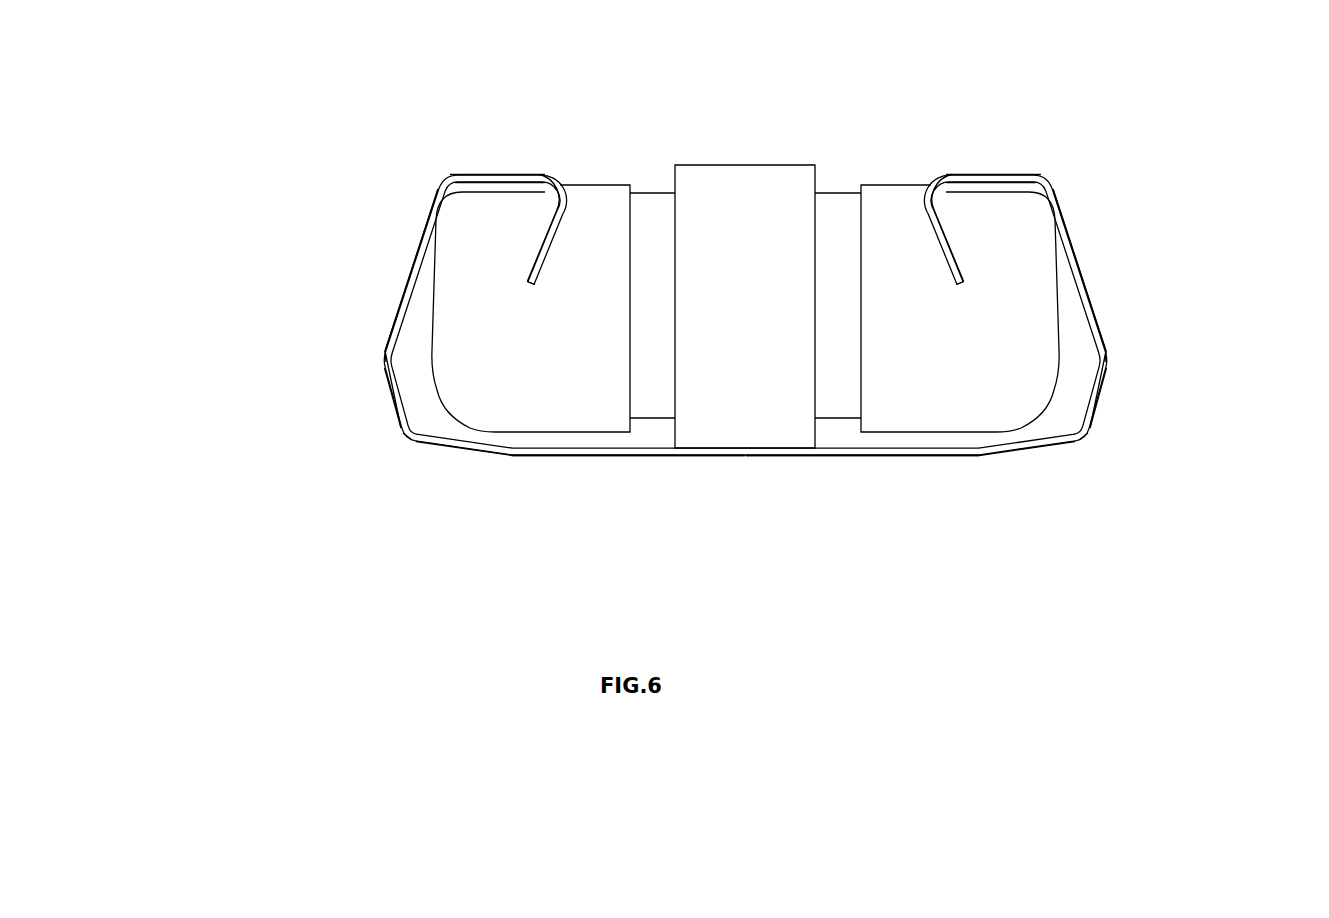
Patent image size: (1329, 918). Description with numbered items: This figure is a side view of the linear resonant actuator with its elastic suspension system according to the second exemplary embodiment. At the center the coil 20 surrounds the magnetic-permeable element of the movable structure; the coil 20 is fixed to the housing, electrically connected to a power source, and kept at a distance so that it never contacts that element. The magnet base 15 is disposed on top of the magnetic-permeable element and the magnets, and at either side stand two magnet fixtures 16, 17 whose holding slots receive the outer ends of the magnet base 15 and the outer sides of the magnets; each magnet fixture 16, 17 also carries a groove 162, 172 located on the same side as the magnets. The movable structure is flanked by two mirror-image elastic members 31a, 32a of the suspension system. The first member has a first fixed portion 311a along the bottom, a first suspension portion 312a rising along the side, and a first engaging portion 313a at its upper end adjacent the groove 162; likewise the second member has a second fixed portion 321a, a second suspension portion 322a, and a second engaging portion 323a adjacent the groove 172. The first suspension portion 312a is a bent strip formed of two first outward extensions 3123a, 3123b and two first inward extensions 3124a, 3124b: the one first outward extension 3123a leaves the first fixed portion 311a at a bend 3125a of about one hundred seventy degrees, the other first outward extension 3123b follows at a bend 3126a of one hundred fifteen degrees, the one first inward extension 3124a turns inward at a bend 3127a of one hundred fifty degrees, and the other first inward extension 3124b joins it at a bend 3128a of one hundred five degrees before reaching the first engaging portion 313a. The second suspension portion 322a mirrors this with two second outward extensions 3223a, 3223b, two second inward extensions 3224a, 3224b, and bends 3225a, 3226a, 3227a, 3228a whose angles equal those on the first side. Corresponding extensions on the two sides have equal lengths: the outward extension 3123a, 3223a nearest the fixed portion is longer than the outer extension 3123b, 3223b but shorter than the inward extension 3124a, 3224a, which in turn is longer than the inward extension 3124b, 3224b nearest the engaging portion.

The magnet base 15 is at (650, 207).
The magnet fixture 16 is at (613, 205).
The magnet fixture 17 is at (877, 195).
The coil 20 is at (743, 178).
The groove 162 is at (548, 258).
The groove 172 is at (941, 248).
The first supporting frame 31a is at (149, 543).
The second supporting frame 32a is at (1214, 560).
The first fixed portion 311a is at (543, 458).
The second fixed portion 321a is at (948, 458).
The first suspension portion 312a is at (160, 148).
The second suspension portion 322a is at (1257, 500).
The first engaging portion 313a is at (565, 212).
The second engaging portion 323a is at (935, 226).
The first outward extension 3123a is at (453, 445).
The first outward extension 3123b is at (393, 398).
The first inward extension 3124a is at (406, 264).
The first inward extension 3124b is at (484, 174).
The bend 3125a is at (505, 456).
The bend 3126a is at (405, 436).
The bend 3127a is at (388, 357).
The bend 3128a is at (450, 183).
The second outward extension 3223a is at (1038, 445).
The second outward extension 3223b is at (1098, 398).
The second inward extension 3224a is at (1085, 263).
The second inward extension 3224b is at (1007, 174).
The bend 3225a is at (986, 456).
The bend 3226a is at (1086, 436).
The bend 3227a is at (1103, 357).
The bend 3228a is at (1045, 183).